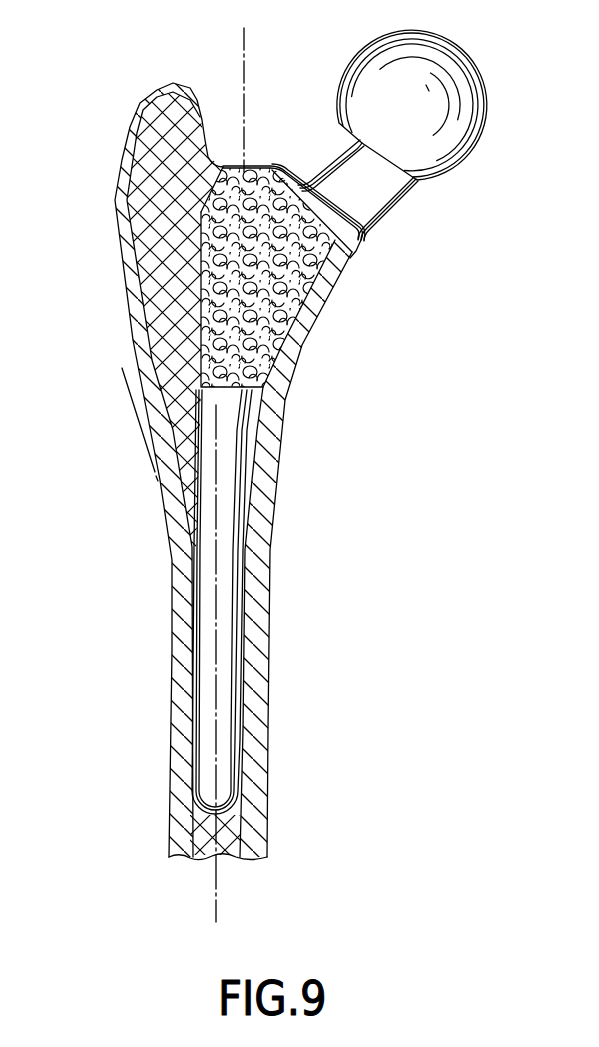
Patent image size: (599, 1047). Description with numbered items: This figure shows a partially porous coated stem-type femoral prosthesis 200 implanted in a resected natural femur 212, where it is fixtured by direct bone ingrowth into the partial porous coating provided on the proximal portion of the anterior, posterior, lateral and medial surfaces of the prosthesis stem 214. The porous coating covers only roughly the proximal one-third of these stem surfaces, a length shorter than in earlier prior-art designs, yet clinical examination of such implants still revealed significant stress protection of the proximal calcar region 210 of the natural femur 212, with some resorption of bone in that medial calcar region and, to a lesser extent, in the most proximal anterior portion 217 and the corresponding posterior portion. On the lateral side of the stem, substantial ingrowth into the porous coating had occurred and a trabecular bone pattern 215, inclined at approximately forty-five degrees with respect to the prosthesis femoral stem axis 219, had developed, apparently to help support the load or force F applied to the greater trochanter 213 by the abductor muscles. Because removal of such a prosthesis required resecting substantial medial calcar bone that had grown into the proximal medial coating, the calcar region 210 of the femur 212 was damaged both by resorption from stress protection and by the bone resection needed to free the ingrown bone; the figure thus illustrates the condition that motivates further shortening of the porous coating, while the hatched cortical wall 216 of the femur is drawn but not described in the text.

The partially porous coated stem-type femoral prosthesis 200 is at (257, 423).
The proximal calcar region 210 is at (342, 277).
The natural femur 212 is at (124, 312).
The greater trochanter 213 is at (135, 122).
The prosthesis stem 214 is at (213, 447).
The trabecular bone pattern 215 is at (181, 352).
The cortical bone wall 216 is at (293, 353).
The most proximal anterior portion 217 is at (312, 277).
The prosthesis femoral stem axis 219 is at (246, 50).
The load or force applied to the greater trochanter F is at (157, 88).